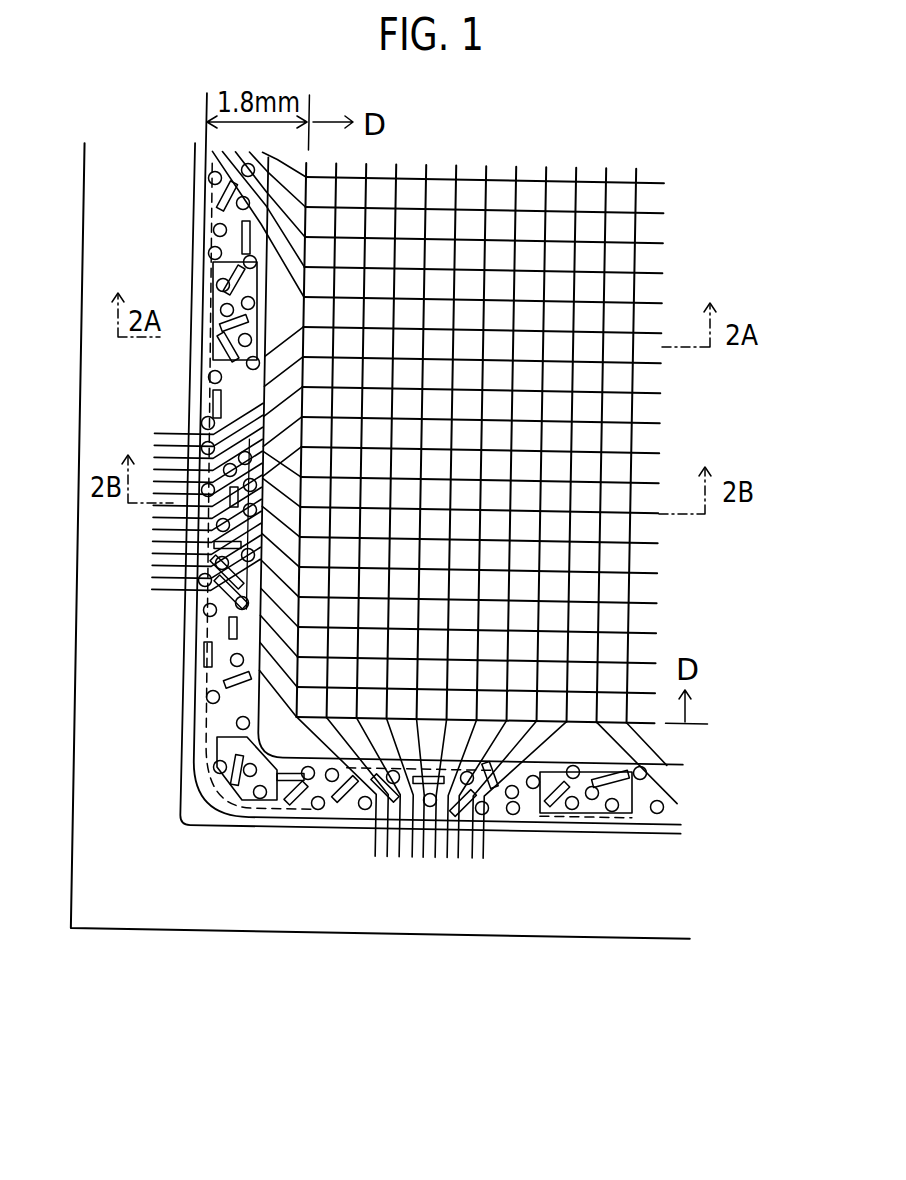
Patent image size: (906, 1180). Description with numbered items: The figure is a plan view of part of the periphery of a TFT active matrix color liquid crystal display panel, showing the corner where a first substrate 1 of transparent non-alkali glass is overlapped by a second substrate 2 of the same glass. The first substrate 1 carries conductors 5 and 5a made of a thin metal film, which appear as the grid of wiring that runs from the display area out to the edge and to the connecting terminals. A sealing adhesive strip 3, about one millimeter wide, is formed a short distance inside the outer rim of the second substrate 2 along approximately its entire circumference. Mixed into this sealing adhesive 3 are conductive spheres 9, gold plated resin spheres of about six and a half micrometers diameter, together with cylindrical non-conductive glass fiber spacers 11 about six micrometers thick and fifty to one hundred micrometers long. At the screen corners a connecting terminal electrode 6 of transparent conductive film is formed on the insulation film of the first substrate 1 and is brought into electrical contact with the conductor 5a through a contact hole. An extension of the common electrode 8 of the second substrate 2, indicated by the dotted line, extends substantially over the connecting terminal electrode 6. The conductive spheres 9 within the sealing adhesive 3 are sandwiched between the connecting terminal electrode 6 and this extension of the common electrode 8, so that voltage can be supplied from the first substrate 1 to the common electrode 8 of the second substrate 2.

The first substrate 1 is at (513, 928).
The second substrate 2 is at (617, 833).
The sealing adhesive strip 3 is at (350, 803).
The conductors 5 is at (593, 178).
The conductor 5a is at (213, 338).
The connecting terminal electrode 6 is at (217, 298).
The common electrode 8 is at (213, 197).
The conductive spheres 9 is at (210, 380).
The glass fiber spacers 11 is at (217, 407).